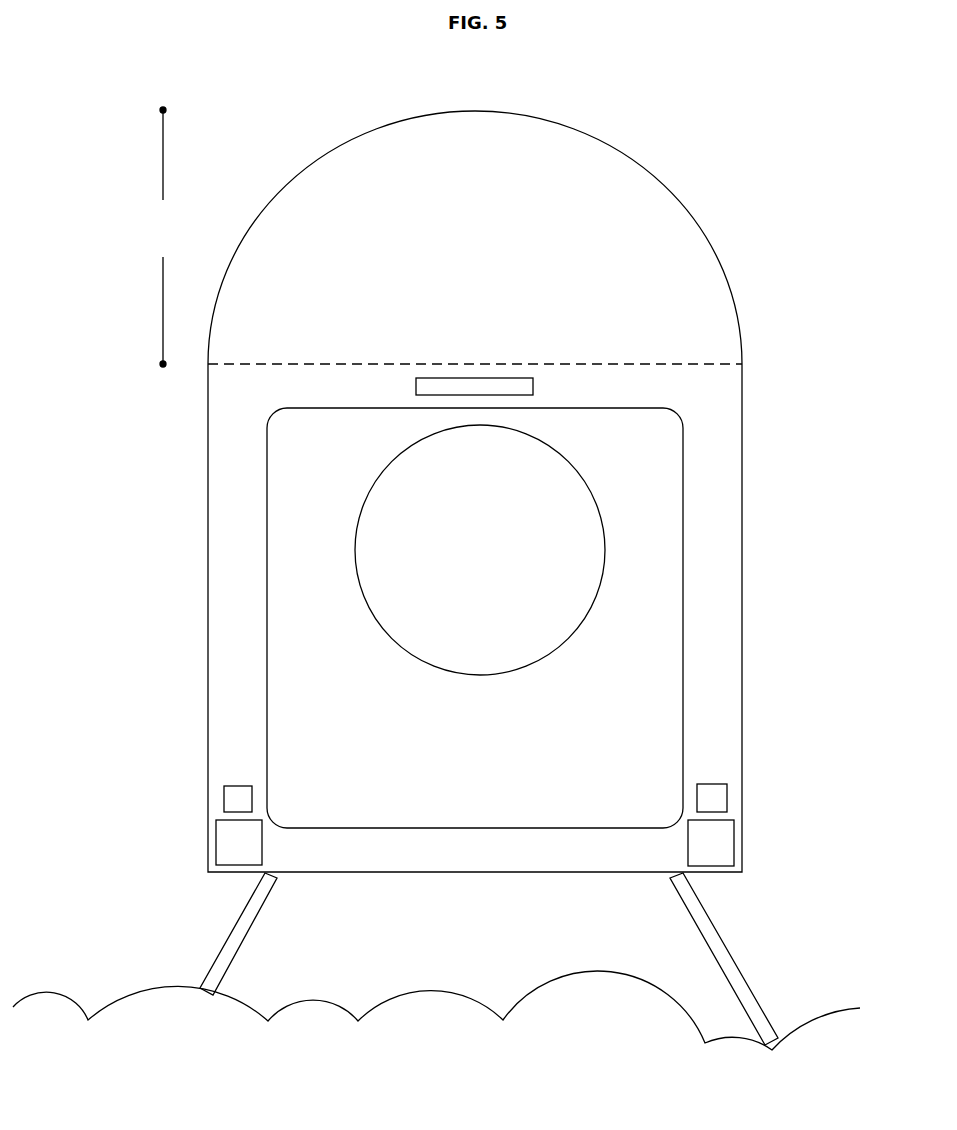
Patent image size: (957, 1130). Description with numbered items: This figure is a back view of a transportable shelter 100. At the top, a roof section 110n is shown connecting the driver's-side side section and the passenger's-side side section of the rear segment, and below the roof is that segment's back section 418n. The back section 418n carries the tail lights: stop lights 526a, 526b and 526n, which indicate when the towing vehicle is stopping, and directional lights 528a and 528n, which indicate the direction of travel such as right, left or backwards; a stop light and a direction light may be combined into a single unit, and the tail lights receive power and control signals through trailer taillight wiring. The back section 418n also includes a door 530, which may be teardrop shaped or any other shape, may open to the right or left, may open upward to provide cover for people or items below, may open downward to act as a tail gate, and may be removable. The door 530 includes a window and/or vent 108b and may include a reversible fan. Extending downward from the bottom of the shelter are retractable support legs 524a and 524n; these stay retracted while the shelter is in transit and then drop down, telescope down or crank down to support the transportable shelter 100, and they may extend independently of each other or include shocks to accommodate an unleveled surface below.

The transportable shelter 100 is at (784, 187).
The roof section 110n is at (166, 237).
The back section 418n is at (475, 619).
The stop light 526b is at (474, 378).
The door 530 is at (475, 618).
The window and/or vent 108b is at (480, 550).
The directional light 528a is at (224, 787).
The directional light 528n is at (727, 785).
The stop light 526a is at (215, 841).
The stop light 526n is at (736, 843).
The retractable support leg 524a is at (247, 934).
The retractable support leg 524n is at (726, 959).